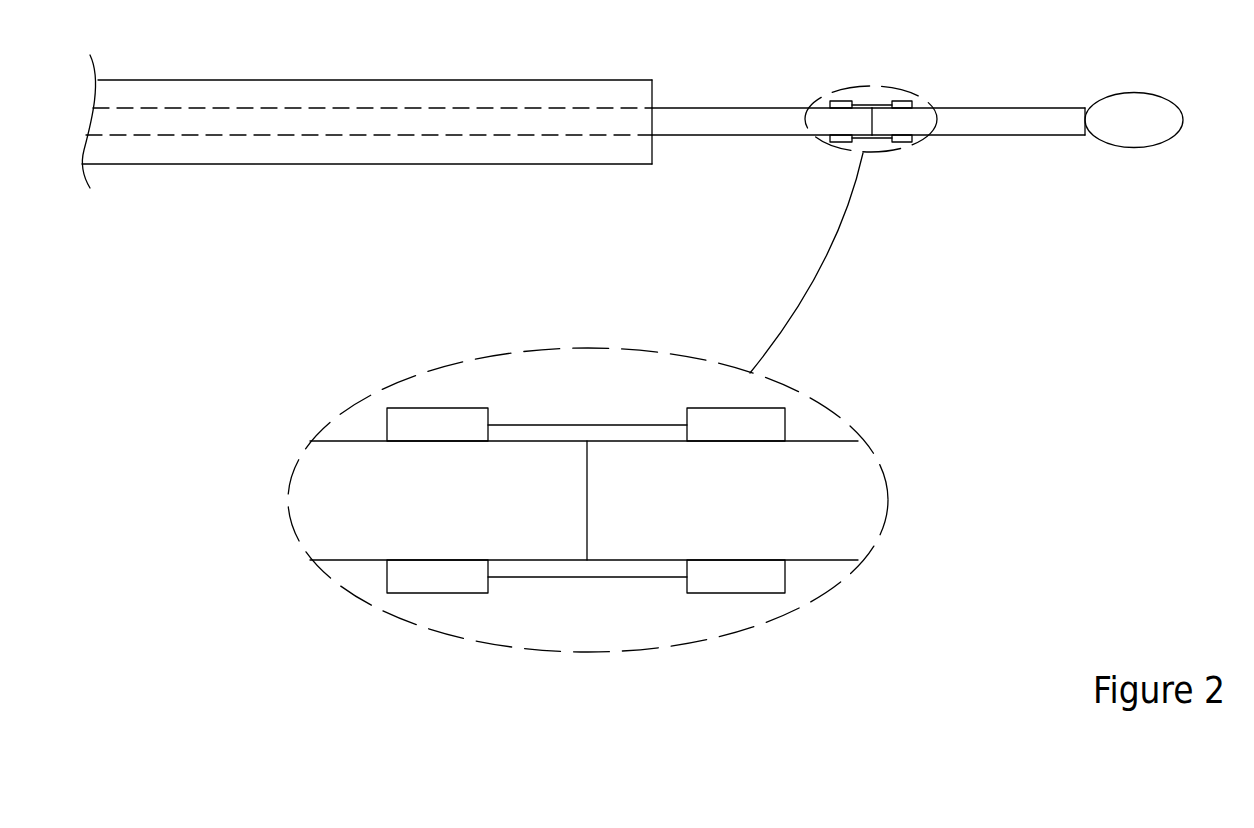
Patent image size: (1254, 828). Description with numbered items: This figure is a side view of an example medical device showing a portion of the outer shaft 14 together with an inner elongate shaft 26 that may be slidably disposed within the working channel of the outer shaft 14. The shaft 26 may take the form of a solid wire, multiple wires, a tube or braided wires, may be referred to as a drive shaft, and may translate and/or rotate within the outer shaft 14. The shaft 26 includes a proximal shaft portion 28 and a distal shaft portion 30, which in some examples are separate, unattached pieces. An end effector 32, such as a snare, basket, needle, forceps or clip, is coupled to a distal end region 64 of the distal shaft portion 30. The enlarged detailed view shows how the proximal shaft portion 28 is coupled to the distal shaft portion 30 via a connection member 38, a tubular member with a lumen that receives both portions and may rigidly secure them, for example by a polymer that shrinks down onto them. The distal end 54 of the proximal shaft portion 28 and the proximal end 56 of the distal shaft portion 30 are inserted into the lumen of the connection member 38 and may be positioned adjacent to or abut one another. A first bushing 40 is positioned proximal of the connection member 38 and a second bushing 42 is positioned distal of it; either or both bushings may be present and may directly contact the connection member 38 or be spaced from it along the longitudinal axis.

The outer shaft 14 is at (374, 78).
The inner elongate shaft 26 is at (753, 143).
The proximal shaft portion 28 is at (804, 101).
The distal shaft portion 30 is at (996, 141).
The end effector 32 is at (1138, 92).
The distal end region 64 is at (1085, 103).
The connection member 38 is at (587, 425).
The first bushing 40 is at (437, 408).
The second bushing 42 is at (733, 408).
The distal end 54 is at (564, 542).
The proximal end 56 is at (604, 540).